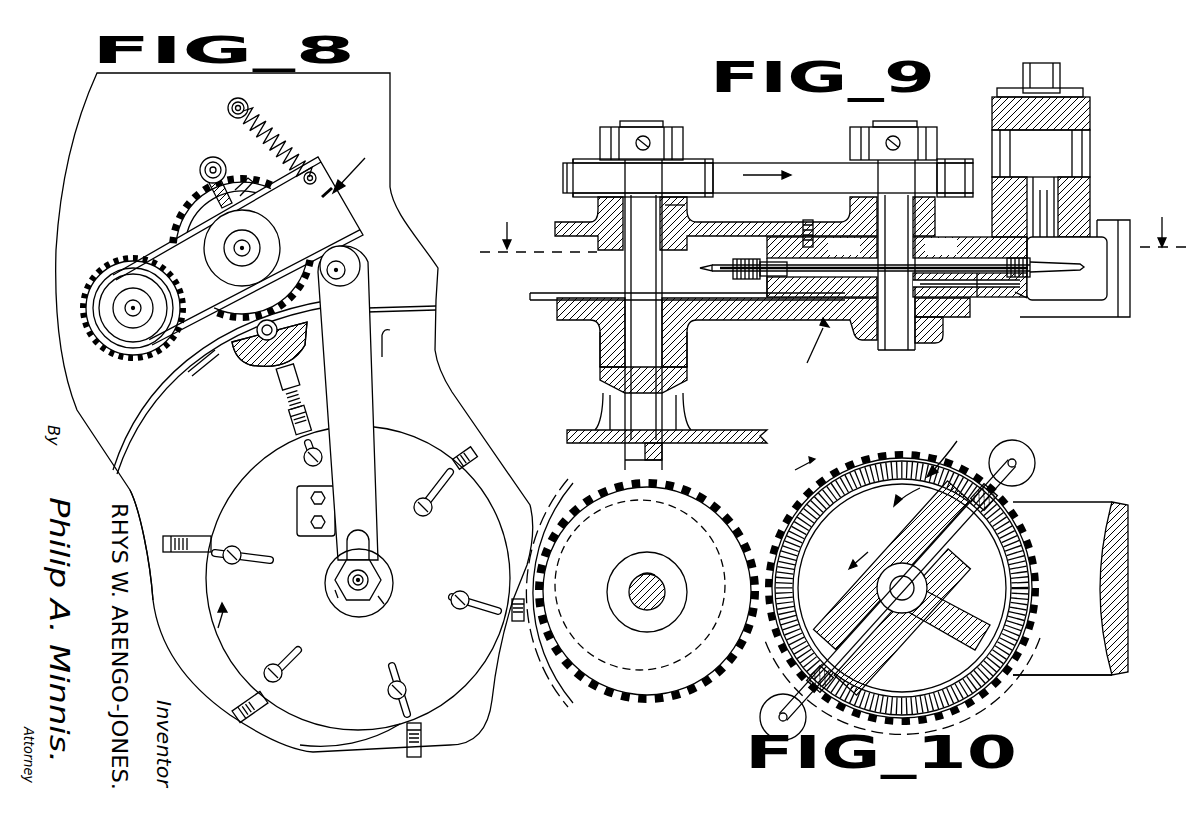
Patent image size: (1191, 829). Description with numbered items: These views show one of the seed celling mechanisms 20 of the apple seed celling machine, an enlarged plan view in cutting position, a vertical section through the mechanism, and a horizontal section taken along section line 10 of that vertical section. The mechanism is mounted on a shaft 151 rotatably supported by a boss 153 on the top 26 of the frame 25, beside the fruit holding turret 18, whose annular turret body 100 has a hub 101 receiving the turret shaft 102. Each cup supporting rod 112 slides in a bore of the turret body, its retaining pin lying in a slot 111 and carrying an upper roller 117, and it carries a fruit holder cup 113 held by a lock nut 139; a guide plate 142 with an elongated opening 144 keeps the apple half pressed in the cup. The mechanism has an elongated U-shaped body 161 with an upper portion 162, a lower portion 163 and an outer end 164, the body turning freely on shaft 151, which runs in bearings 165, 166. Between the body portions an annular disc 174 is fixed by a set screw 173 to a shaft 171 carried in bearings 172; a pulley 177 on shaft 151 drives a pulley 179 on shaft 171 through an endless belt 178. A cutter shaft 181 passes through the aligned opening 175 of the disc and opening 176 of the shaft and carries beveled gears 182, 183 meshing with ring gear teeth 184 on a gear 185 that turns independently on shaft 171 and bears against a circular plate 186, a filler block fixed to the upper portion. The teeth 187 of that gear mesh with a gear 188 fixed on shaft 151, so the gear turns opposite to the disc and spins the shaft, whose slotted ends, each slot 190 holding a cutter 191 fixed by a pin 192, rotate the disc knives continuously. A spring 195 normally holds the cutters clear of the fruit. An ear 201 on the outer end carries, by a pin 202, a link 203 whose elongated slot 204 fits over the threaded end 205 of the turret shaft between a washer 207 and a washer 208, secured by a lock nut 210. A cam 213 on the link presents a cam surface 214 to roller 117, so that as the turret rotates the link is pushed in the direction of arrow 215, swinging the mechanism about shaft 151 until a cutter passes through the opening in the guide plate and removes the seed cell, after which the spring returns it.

In FIG. 9, the section line 10— 10 is at (835, 250).
In FIG. 8, the fruit holding turret 18 is at (455, 686).
In FIG. 8, the seed celling mechanism 20 is at (346, 166).
In FIG. 9, the seed celling mechanism 20 is at (813, 351).
In FIG. 10, the seed celling mechanism 20 is at (949, 449).
In FIG. 8, the frame 25 is at (425, 275).
In FIG. 8, the top 26 is at (210, 437).
In FIG. 9, the top 26 is at (730, 430).
In FIG. 8, the turret body 100 is at (330, 731).
In FIG. 8, the hub 101 is at (352, 583).
In FIG. 8, the turret shaft 102 is at (368, 578).
In FIG. 8, the slot 111 is at (306, 450).
In FIG. 8, the cup supporting rod 112 is at (287, 421).
In FIG. 8, the fruit holder cup 113 is at (260, 366).
In FIG. 8, the roller 117 is at (236, 553).
In FIG. 8, the lock nut 139 is at (280, 388).
In FIG. 8, the guide plate 142 is at (147, 405).
In FIG. 8, the elongated opening 144 is at (190, 365).
In FIG. 8, the shaft 151 is at (128, 302).
In FIG. 9, the shaft 151 is at (643, 123).
In FIG. 10, the shaft 151 is at (665, 586).
In FIG. 9, the boss 153 is at (610, 378).
In FIG. 8, the U-shaped body 161 is at (347, 219).
In FIG. 9, the U-shaped body 161 is at (578, 218).
In FIG. 10, the U-shaped body 161 is at (1090, 511).
In FIG. 8, the upper portion 162 is at (322, 229).
In FIG. 9, the upper portion 162 is at (754, 226).
In FIG. 9, the lower portion 163 is at (754, 310).
In FIG. 10, the lower portion 163 is at (1080, 660).
In FIG. 9, the outer end 164 is at (1130, 284).
In FIG. 10, the outer end 164 is at (1124, 586).
In FIG. 9, the bearing 165 is at (681, 206).
In FIG. 9, the bearing 166 is at (682, 348).
In FIG. 8, the shaft 171 is at (246, 248).
In FIG. 9, the shaft 171 is at (897, 124).
In FIG. 10, the shaft 171 is at (896, 562).
In FIG. 9, the bearings 172 is at (936, 206).
In FIG. 10, the set screw 173 is at (934, 600).
In FIG. 9, the annular disc 174 is at (977, 278).
In FIG. 10, the annular disc 174 is at (843, 587).
In FIG. 9, the opening 175 is at (897, 266).
In FIG. 10, the opening 175 is at (864, 652).
In FIG. 9, the opening 176 is at (857, 254).
In FIG. 10, the opening 176 is at (927, 585).
In FIG. 8, the pulley 177 is at (99, 300).
In FIG. 9, the pulley 177 is at (590, 163).
In FIG. 8, the endless belt 178 is at (155, 245).
In FIG. 9, the endless belt 178 is at (766, 155).
In FIG. 8, the pulley 179 is at (257, 226).
In FIG. 9, the pulley 179 is at (941, 164).
In FIG. 8, the cutter shaft 181 is at (200, 170).
In FIG. 9, the cutter shaft 181 is at (1020, 283).
In FIG. 10, the cutter shaft 181 is at (940, 528).
In FIG. 9, the beveled gear 182 is at (783, 262).
In FIG. 10, the beveled gear 182 is at (785, 675).
In FIG. 9, the beveled gear 183 is at (1027, 261).
In FIG. 10, the beveled gear 183 is at (1012, 496).
In FIG. 9, the ring gear teeth 184 is at (770, 286).
In FIG. 10, the ring gear teeth 184 is at (897, 460).
In FIG. 8, the gear 185 is at (178, 214).
In FIG. 9, the gear 185 is at (1033, 295).
In FIG. 10, the gear 185 is at (843, 463).
In FIG. 8, the circular plate 186 is at (205, 206).
In FIG. 9, the circular plate 186 is at (800, 238).
In FIG. 8, the teeth 187 is at (258, 157).
In FIG. 10, the teeth 187 is at (793, 492).
In FIG. 8, the gear 188 is at (82, 320).
In FIG. 9, the gear 188 is at (578, 293).
In FIG. 10, the gear 188 is at (648, 531).
In FIG. 9, the slot 190 is at (732, 265).
In FIG. 8, the cutter 191 is at (214, 157).
In FIG. 9, the cutter 191 is at (724, 272).
In FIG. 10, the cutter 191 is at (1017, 455).
In FIG. 10, the pin 192 is at (1020, 463).
In FIG. 8, the spring 195 is at (262, 128).
In FIG. 8, the ear 201 is at (361, 255).
In FIG. 9, the ear 201 is at (1092, 207).
In FIG. 8, the pin 202 is at (346, 278).
In FIG. 9, the pin 202 is at (1048, 65).
In FIG. 8, the link 203 is at (367, 404).
In FIG. 9, the link 203 is at (1090, 148).
In FIG. 8, the elongated slot 204 is at (368, 545).
In FIG. 8, the threaded end 205 is at (367, 586).
In FIG. 8, the washer 207 is at (370, 585).
In FIG. 8, the washer 208 is at (342, 576).
In FIG. 8, the lock nut 210 is at (373, 595).
In FIG. 8, the cam 213 is at (292, 513).
In FIG. 8, the cam surface 214 is at (298, 498).
In FIG. 8, the arrow 215 is at (401, 343).